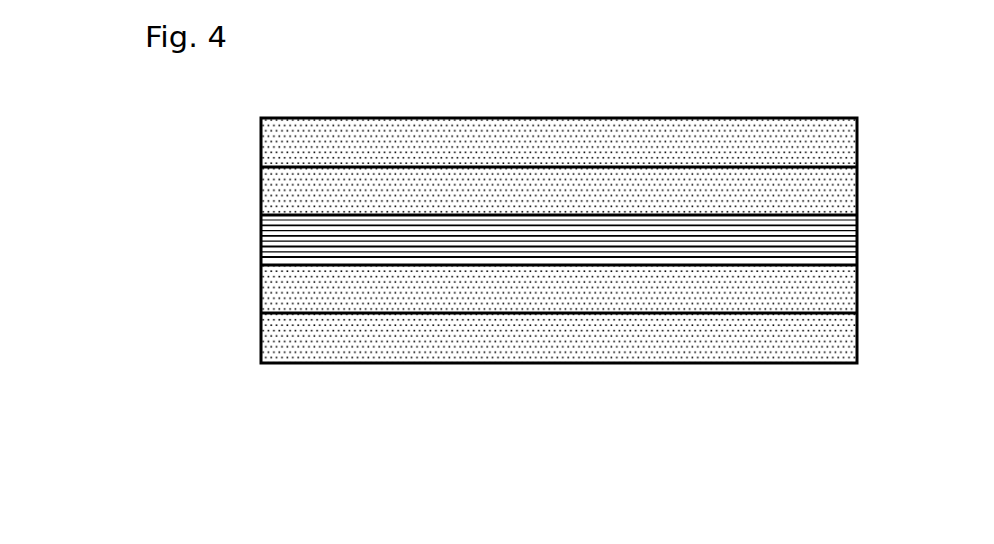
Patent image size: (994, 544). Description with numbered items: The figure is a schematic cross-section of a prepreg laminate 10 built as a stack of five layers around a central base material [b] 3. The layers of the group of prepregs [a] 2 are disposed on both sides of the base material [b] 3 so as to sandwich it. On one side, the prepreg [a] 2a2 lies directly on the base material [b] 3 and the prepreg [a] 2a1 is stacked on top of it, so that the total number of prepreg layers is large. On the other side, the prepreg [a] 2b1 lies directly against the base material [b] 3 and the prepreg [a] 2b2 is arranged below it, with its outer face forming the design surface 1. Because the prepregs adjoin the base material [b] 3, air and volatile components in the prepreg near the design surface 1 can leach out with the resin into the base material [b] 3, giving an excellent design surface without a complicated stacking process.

The prepreg laminate 10 is at (591, 90).
The design surface 1 is at (417, 363).
The group of prepregs [a] 2 is at (92, 155).
The prepreg [a] 2a1 is at (260, 132).
The prepreg [a] 2a2 is at (260, 188).
The base material [b] 3 is at (870, 240).
The prepreg [a] 2b1 is at (260, 287).
The prepreg [a] 2b2 is at (260, 337).